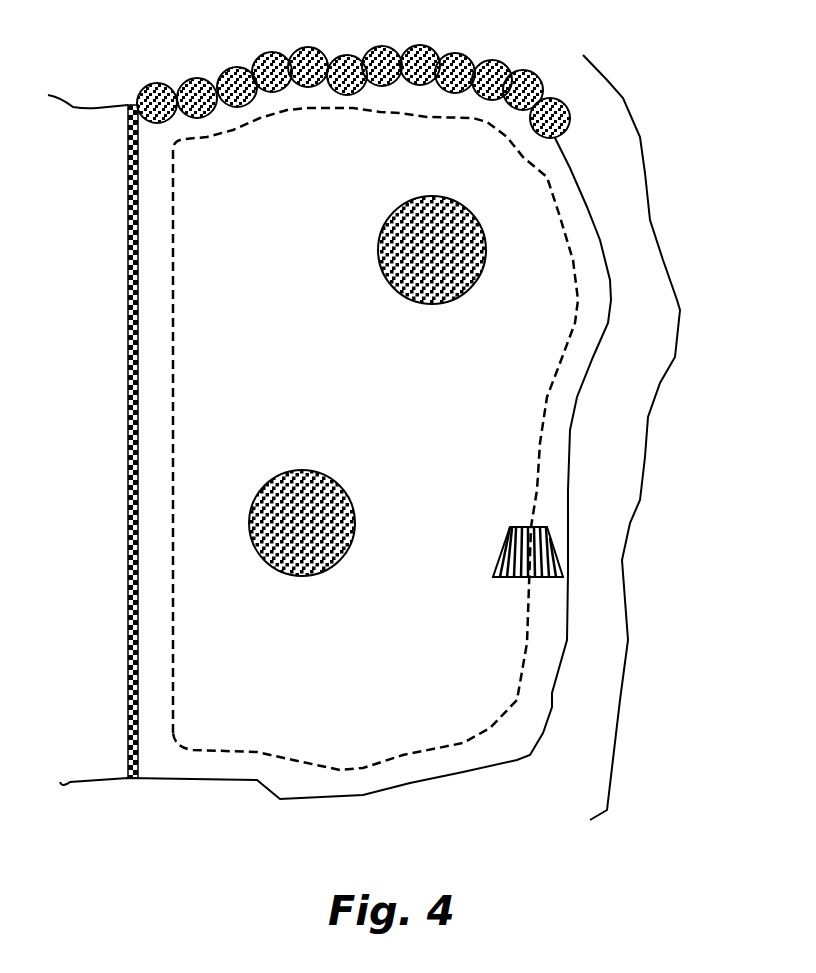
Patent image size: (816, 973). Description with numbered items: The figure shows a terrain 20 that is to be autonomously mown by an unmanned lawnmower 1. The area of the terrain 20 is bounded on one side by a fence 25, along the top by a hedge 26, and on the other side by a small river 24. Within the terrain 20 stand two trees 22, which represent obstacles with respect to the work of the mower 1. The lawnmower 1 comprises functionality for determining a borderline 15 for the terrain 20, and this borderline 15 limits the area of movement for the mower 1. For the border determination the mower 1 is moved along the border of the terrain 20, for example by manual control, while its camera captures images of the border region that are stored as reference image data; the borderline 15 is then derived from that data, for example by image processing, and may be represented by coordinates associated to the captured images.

The unmanned lawnmower 1 is at (537, 562).
The borderline 15 is at (527, 645).
The terrain 20 is at (343, 400).
The trees 22 is at (455, 275).
The small river 24 is at (628, 427).
The fence 25 is at (128, 313).
The hedge 26 is at (268, 73).